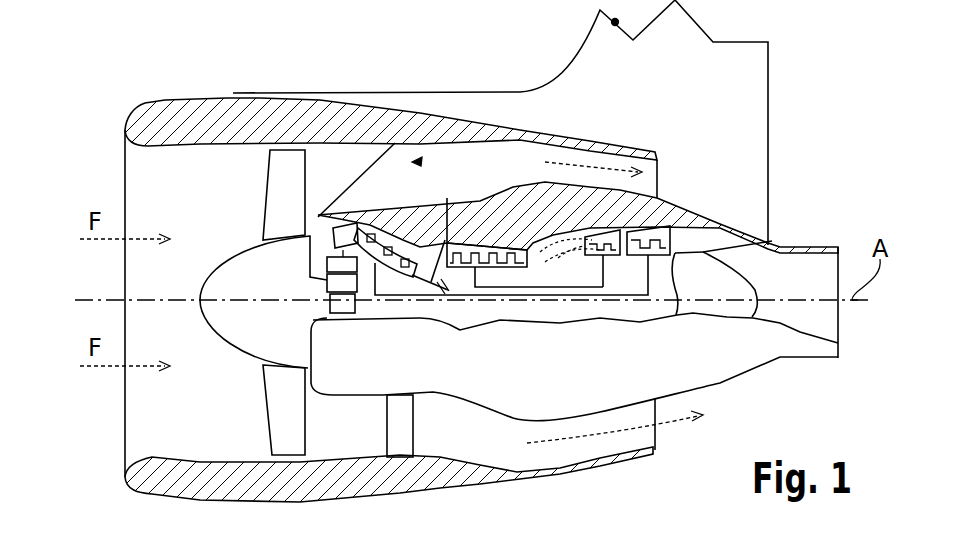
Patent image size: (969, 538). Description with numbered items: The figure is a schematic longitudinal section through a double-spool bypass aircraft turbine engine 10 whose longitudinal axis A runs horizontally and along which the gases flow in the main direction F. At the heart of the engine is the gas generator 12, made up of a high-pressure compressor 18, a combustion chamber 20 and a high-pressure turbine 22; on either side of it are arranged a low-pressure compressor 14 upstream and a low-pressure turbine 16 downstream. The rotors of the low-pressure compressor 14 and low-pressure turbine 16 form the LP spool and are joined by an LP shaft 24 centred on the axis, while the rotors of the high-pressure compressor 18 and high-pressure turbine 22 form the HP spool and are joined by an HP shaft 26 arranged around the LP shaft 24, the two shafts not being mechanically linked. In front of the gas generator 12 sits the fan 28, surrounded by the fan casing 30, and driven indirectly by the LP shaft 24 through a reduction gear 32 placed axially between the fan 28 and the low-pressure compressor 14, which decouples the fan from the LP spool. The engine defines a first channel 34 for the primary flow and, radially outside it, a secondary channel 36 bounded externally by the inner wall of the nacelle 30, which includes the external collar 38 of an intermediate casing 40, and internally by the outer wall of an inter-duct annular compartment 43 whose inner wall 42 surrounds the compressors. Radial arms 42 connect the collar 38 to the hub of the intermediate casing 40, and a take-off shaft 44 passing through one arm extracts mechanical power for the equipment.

The turbine engine 10 is at (155, 57).
The gas generator 12 is at (515, 287).
The low-pressure compressor 14 is at (392, 275).
The low-pressure turbine 16 is at (686, 242).
The high-pressure compressor 18 is at (491, 243).
The combustion chamber 20 is at (569, 264).
The high-pressure turbine 22 is at (620, 261).
The low-pressure shaft 24 is at (480, 288).
The high-pressure shaft 26 is at (556, 295).
The fan 28 is at (262, 423).
The fan casing 30 is at (277, 112).
The reduction gear 32 is at (342, 338).
The first channel 34 is at (543, 243).
The secondary channel 36 is at (595, 165).
The external collar 38 is at (363, 140).
The intermediate casing 40 is at (418, 162).
The radial arms 42 is at (477, 214).
The inter-duct annular compartment 43 is at (358, 224).
The take-off shaft 44 is at (447, 198).